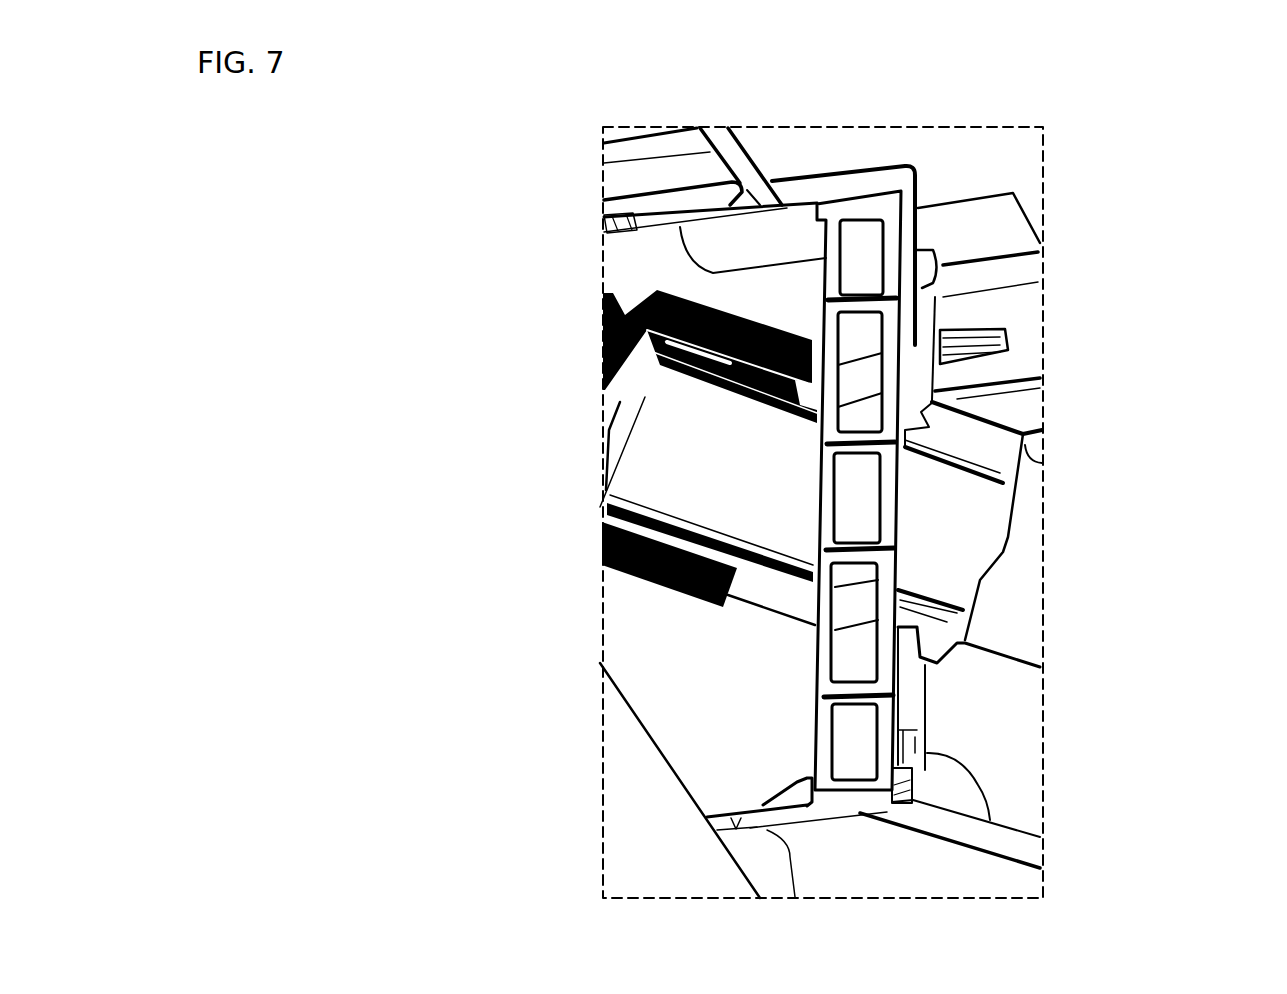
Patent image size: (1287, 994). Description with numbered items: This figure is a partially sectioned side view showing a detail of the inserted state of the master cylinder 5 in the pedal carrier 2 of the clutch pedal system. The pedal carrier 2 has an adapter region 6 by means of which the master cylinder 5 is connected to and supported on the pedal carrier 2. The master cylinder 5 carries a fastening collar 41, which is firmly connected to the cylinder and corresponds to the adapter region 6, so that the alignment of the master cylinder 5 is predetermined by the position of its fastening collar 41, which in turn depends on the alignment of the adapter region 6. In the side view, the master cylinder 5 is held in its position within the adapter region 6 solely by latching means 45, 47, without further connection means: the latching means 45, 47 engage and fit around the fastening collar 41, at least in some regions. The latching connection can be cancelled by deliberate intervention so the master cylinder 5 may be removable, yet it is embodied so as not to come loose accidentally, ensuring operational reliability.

The pedal carrier 2 is at (1008, 235).
The master cylinder 5 is at (562, 460).
The adapter region 6 is at (695, 682).
The fastening collar 41 is at (880, 550).
The latching means 45 is at (810, 213).
The latching means 47 is at (807, 777).